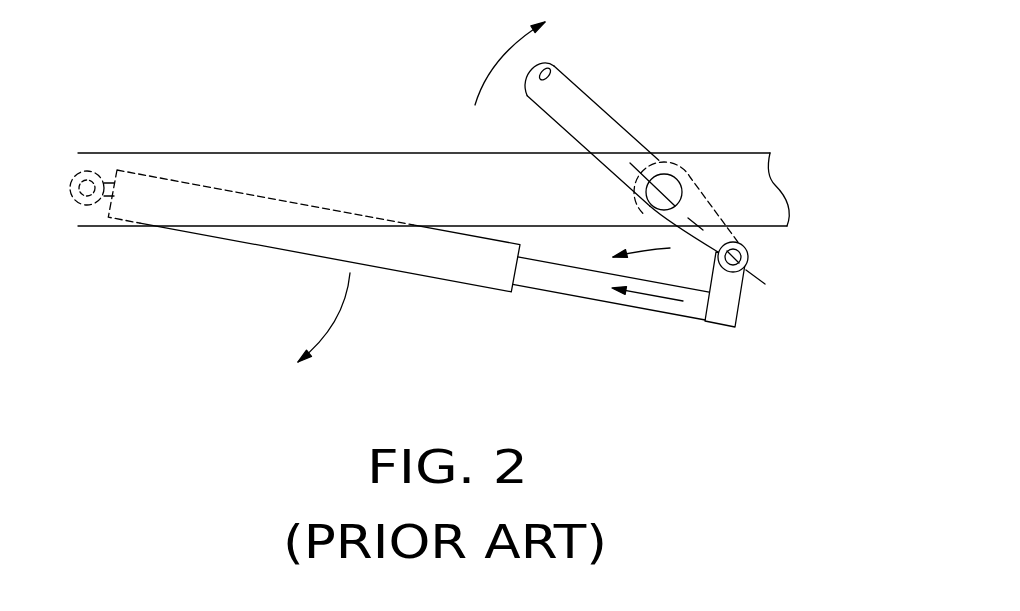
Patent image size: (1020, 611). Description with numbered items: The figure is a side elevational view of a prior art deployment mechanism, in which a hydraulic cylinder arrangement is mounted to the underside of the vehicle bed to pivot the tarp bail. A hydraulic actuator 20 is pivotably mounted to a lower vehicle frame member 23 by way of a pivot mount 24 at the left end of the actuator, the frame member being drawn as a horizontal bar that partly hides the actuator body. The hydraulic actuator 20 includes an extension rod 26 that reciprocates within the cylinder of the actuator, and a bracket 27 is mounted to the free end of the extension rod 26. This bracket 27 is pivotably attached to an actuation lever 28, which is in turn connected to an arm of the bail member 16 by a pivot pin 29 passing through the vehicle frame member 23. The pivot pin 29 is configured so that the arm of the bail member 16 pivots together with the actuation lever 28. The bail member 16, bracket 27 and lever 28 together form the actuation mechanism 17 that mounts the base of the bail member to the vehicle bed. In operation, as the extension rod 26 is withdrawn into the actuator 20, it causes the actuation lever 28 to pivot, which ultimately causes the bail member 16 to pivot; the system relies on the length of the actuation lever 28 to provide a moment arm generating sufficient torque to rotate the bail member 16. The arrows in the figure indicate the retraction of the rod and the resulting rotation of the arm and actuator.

The bail member 16 is at (587, 103).
The actuation mechanism 17 is at (774, 257).
The hydraulic actuator 20 is at (463, 270).
The lower vehicle frame member 23 is at (232, 152).
The pivot mount 24 is at (103, 170).
The extension rod 26 is at (645, 300).
The bracket 27 is at (725, 303).
The actuation lever 28 is at (745, 240).
The pivot pin 29 is at (665, 192).